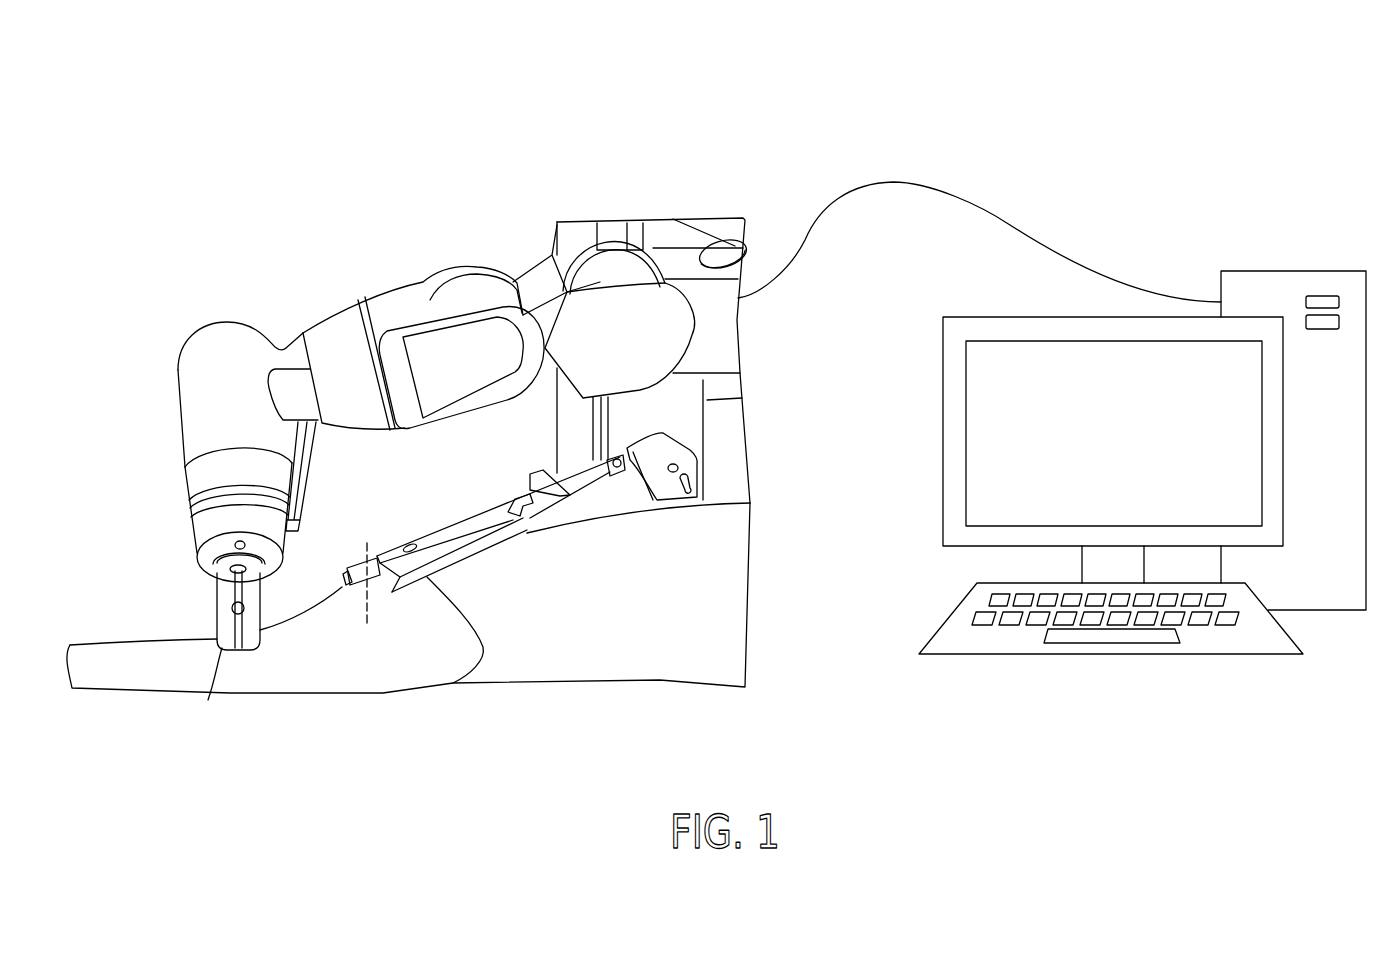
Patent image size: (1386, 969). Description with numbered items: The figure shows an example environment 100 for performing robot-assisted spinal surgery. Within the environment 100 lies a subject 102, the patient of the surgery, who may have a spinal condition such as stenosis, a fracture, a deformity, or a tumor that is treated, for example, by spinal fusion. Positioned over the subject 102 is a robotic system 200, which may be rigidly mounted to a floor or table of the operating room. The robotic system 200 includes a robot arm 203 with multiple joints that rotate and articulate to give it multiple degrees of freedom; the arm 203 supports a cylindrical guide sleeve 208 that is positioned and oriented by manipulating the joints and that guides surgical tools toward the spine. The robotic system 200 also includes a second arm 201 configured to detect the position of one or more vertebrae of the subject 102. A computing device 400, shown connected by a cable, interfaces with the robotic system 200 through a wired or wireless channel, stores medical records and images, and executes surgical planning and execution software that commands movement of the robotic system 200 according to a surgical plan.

The environment 100 is at (772, 121).
The subject 102 is at (383, 690).
The robotic system 200 is at (608, 230).
The second arm 201 is at (550, 530).
The robot arm 203 is at (393, 287).
The cylindrical guide sleeve 208 is at (222, 648).
The computing device 400 is at (1308, 268).